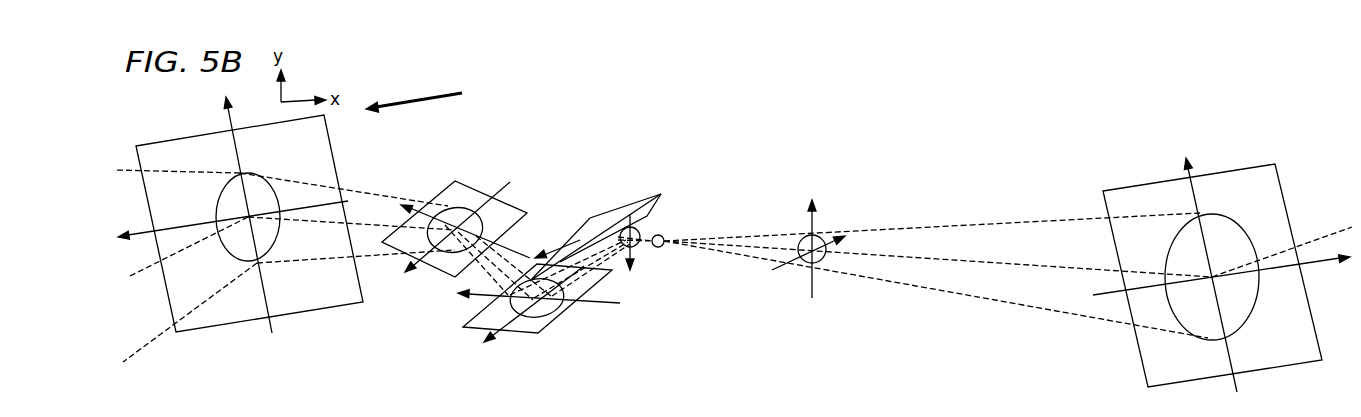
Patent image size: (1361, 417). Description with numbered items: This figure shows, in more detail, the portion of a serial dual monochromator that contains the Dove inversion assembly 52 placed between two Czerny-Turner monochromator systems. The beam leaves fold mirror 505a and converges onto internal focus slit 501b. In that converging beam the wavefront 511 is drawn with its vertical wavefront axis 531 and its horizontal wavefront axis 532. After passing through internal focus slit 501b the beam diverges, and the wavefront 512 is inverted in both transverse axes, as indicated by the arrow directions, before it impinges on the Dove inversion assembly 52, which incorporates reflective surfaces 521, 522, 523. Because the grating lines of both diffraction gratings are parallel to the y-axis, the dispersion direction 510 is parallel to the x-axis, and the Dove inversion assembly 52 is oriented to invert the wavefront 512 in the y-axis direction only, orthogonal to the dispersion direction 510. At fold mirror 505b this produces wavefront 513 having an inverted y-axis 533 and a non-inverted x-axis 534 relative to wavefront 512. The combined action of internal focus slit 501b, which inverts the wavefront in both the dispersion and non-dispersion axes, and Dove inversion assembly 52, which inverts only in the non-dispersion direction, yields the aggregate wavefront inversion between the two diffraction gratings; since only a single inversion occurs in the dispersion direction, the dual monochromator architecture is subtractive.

The Dove inversion assembly 52 is at (568, 154).
The internal focus slit 501b is at (665, 235).
The fold mirror 505a is at (1228, 182).
The fold mirror 505b is at (315, 303).
The dispersion direction 510 is at (422, 102).
The wavefront 511 is at (830, 262).
The wavefront 512 is at (636, 250).
The wavefront 513 is at (274, 197).
The reflective surface 521 is at (588, 223).
The reflective surface 522 is at (555, 318).
The reflective surface 523 is at (432, 268).
The vertical wavefront axis 531 is at (815, 220).
The horizontal wavefront axis 532 is at (778, 265).
The inverted y-axis 533 is at (226, 122).
The non-inverted x-axis 534 is at (190, 227).